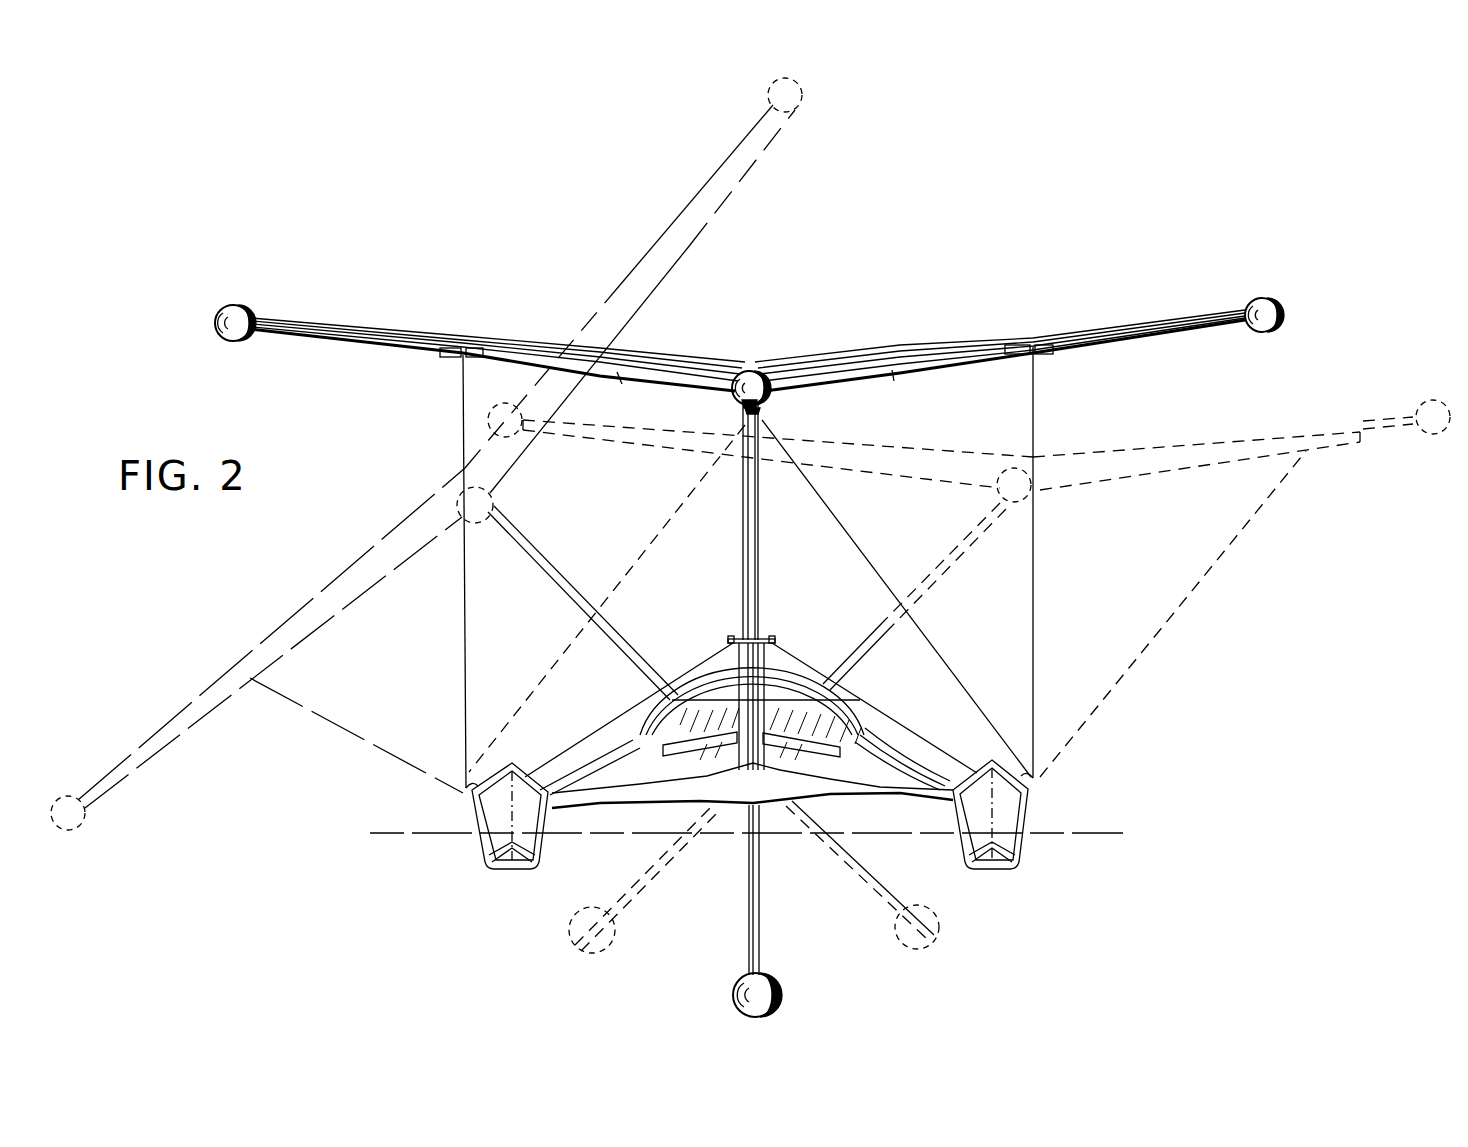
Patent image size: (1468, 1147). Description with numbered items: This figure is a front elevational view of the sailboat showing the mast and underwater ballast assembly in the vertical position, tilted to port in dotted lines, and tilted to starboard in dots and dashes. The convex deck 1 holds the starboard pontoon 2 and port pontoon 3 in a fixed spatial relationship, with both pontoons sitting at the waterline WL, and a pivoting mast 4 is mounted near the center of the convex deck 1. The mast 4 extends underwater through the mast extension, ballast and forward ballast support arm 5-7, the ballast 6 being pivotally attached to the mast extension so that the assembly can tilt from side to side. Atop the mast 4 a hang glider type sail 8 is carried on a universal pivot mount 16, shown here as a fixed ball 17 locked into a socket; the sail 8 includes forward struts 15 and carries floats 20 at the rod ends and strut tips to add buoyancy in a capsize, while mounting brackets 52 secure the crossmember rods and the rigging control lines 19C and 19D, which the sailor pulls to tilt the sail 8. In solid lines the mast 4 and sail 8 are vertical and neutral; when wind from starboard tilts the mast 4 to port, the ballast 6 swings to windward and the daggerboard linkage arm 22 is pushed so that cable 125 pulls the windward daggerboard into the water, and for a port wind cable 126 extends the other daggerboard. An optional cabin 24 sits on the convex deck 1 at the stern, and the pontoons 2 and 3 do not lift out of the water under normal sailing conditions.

The convex deck 1 is at (848, 793).
The starboard pontoon 2 is at (477, 801).
The port pontoon 3 is at (1031, 800).
The pivoting mast 4 is at (577, 561).
The mast extension, ballast and forward ballast support arm 5-7 is at (760, 908).
The ballast 6 is at (737, 986).
The hang glider type sail 8 is at (822, 345).
The forward struts 15 is at (757, 389).
The universal pivot mount 16 is at (760, 402).
The fixed ball 17 is at (744, 404).
The rigging control line 19C is at (1037, 577).
The rigging control line 19D is at (463, 648).
The floats 20 is at (243, 306).
The daggerboard linkage arm 22 is at (738, 634).
The cabin 24 is at (863, 725).
The mounting brackets 52 is at (447, 360).
The cable 125 is at (612, 722).
The cable 126 is at (881, 713).
The waterline WL is at (1090, 828).